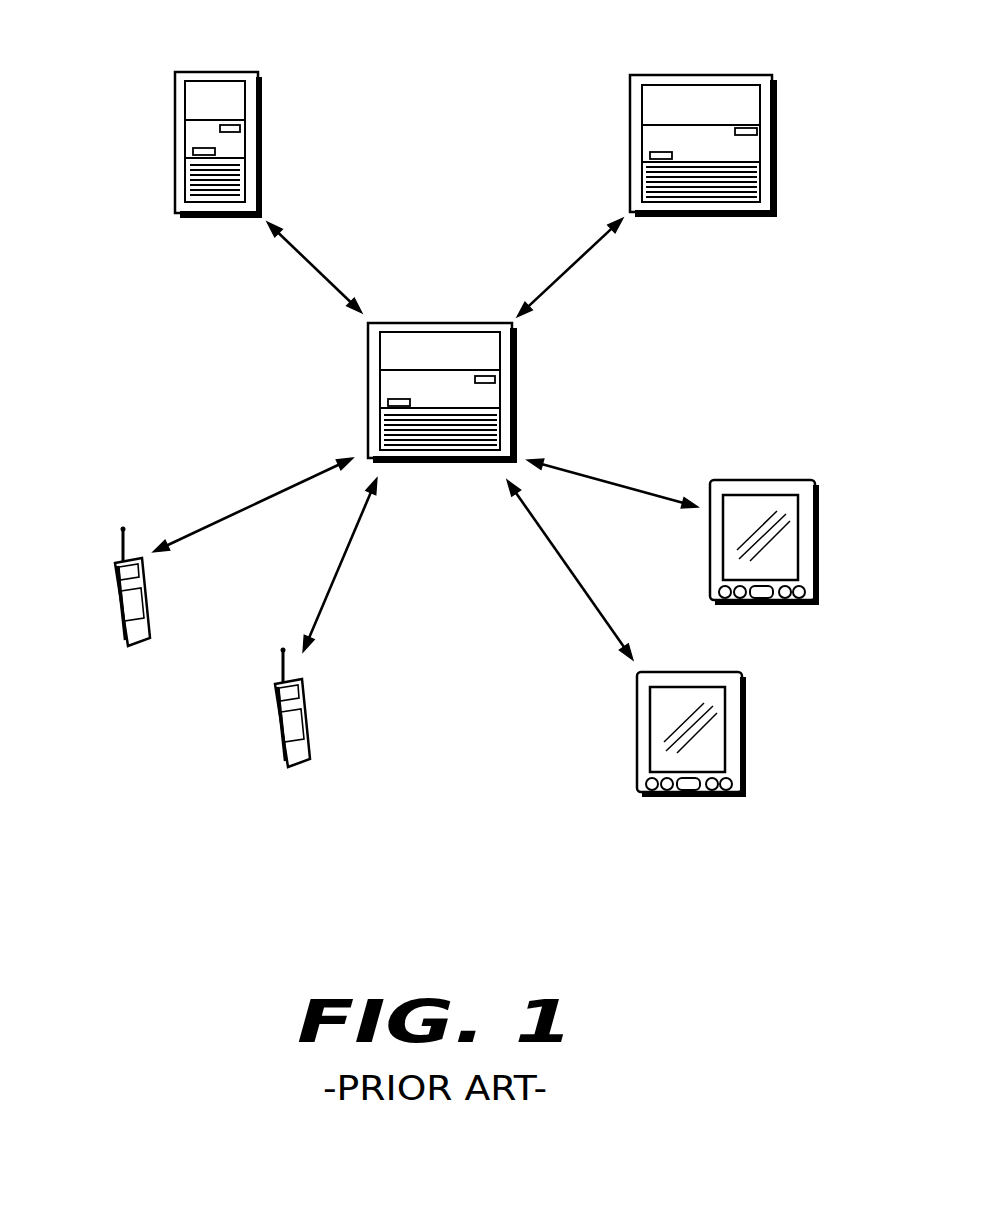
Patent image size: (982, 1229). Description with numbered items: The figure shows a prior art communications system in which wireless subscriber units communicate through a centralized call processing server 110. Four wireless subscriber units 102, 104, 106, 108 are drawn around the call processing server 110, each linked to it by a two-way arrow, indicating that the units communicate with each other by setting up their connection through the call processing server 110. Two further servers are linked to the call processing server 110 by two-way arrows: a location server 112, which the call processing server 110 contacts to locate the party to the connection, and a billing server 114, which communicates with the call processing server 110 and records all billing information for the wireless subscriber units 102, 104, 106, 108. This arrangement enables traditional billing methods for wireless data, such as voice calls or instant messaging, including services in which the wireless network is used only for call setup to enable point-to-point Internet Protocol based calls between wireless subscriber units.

The wireless subscriber unit 102 is at (115, 583).
The wireless subscriber unit 104 is at (275, 704).
The wireless subscriber unit 106 is at (748, 721).
The wireless subscriber unit 108 is at (820, 529).
The call processing server 110 is at (440, 323).
The location server 112 is at (701, 75).
The billing server 114 is at (215, 72).